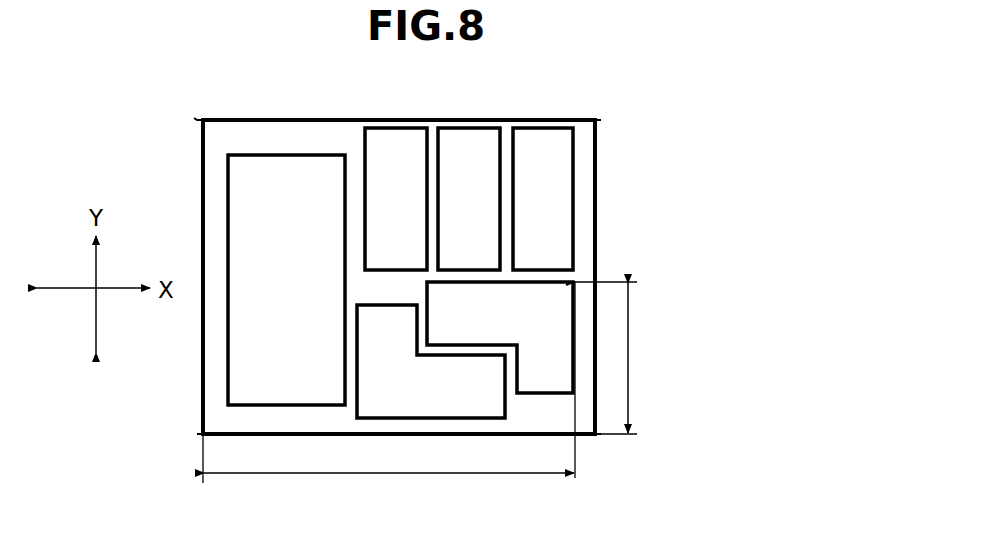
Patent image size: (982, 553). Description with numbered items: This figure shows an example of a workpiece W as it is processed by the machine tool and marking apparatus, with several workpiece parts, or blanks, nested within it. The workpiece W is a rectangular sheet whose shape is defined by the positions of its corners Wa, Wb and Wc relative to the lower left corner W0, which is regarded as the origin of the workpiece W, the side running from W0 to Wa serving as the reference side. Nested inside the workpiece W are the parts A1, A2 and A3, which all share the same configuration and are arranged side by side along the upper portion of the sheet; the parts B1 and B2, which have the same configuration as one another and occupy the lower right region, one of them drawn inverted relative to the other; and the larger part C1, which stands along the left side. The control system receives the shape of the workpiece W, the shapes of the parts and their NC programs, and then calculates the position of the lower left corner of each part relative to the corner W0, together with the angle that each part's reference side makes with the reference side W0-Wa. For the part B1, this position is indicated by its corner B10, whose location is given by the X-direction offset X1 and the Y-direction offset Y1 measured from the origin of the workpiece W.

The workpiece W is at (580, 172).
The corner of workpiece Wa is at (600, 434).
The corner of workpiece Wb is at (595, 119).
The corner of workpiece Wc is at (203, 120).
The lower left corner of workpiece W0 is at (203, 436).
The workpiece part A1 is at (396, 199).
The workpiece part A2 is at (469, 199).
The workpiece part A3 is at (543, 199).
The workpiece part B1 is at (500, 337).
The workpiece part B2 is at (431, 361).
The workpiece part C1 is at (286, 280).
The reference corner point of region B1 B10 is at (573, 282).
The X-direction dimension of region B1 origin X1 is at (389, 398).
The Y-direction dimension of region B1 origin Y1 is at (619, 358).